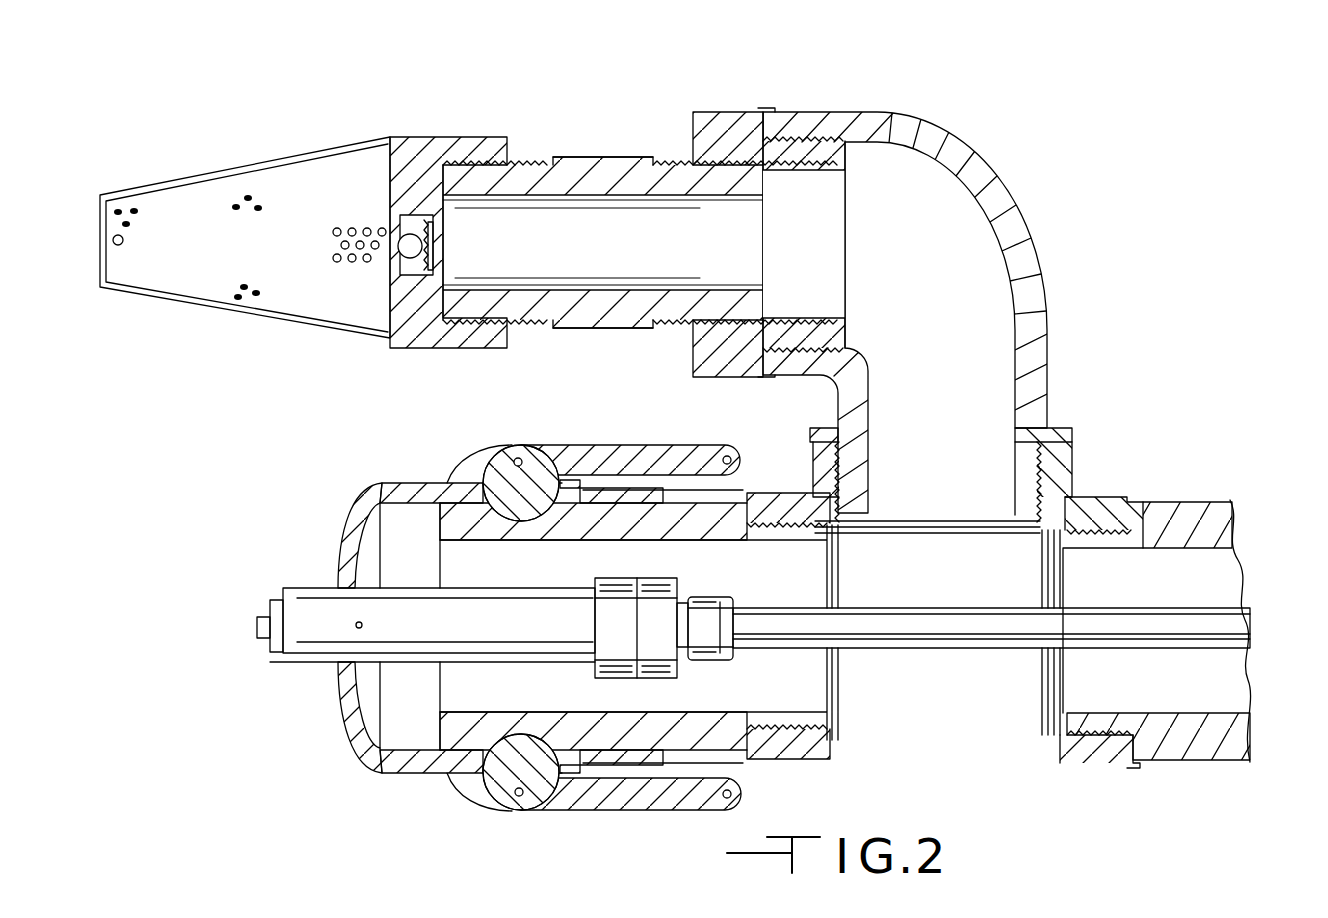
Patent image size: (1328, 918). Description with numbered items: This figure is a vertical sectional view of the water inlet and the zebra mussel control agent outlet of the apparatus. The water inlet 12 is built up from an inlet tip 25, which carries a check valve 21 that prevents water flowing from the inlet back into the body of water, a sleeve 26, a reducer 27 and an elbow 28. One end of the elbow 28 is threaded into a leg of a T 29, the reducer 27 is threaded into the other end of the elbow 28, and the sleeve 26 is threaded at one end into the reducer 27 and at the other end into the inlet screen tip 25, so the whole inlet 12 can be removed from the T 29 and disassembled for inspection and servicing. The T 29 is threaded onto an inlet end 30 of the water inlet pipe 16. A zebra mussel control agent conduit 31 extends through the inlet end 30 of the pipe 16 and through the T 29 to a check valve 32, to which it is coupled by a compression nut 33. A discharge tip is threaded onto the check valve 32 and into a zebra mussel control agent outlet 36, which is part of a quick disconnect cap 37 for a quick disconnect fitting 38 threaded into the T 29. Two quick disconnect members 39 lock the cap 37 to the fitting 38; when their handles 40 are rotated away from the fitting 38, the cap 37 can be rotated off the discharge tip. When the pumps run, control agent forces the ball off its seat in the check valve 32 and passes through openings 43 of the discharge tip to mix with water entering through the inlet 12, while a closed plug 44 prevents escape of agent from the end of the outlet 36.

The water inlet 12 is at (586, 154).
The water inlet pipe 16 is at (1180, 500).
The check valve 21 is at (418, 210).
The inlet tip 25 is at (201, 176).
The sleeve 26 is at (620, 330).
The reducer 27 is at (713, 110).
The elbow 28 is at (1020, 196).
The T 29 is at (1103, 490).
The inlet end 30 is at (1141, 764).
The zebra mussel control agent conduit 31 is at (1236, 580).
The check valve 32 is at (660, 578).
The compression nut 33 is at (707, 662).
The zebra mussel control agent outlet 36 is at (307, 587).
The quick disconnect cap 37 is at (357, 485).
The quick disconnect fitting 38 is at (473, 541).
The quick disconnect members 39 is at (598, 446).
The handles 40 is at (666, 447).
The openings 43 is at (357, 627).
The closed plug 44 is at (272, 600).